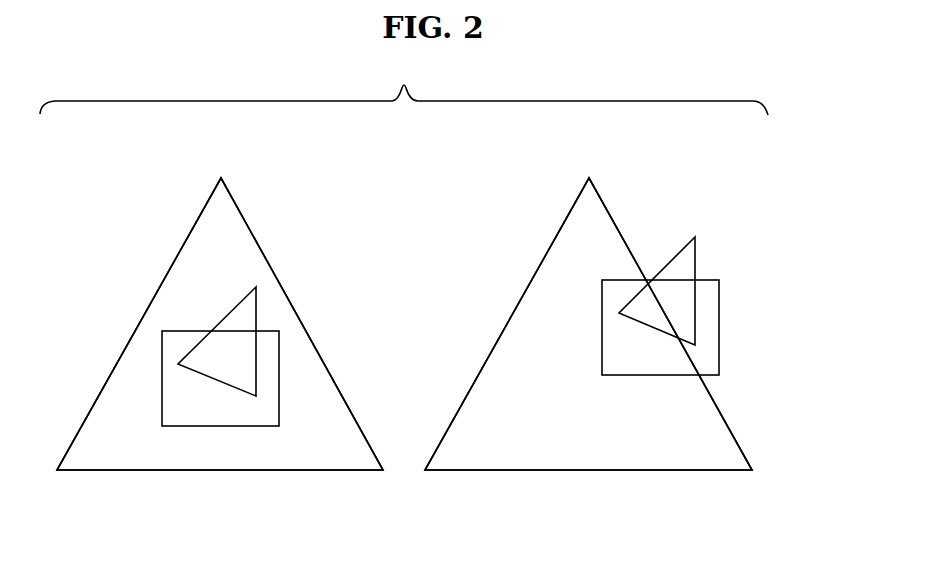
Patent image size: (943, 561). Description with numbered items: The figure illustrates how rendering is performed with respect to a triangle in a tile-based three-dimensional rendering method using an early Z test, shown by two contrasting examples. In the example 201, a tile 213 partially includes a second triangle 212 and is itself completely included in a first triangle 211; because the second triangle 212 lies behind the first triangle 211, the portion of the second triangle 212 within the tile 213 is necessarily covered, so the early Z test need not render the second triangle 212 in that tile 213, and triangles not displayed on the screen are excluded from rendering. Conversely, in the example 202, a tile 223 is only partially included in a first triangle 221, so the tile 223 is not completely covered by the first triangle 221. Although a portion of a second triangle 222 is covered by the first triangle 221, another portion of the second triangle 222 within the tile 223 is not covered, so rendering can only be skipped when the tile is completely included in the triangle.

The example 201 is at (220, 346).
The example 202 is at (588, 346).
The first triangle 211 is at (250, 223).
The second triangle 212 is at (256, 303).
The tile 213 is at (279, 358).
The first triangle 221 is at (605, 205).
The second triangle 222 is at (695, 250).
The tile 223 is at (719, 327).